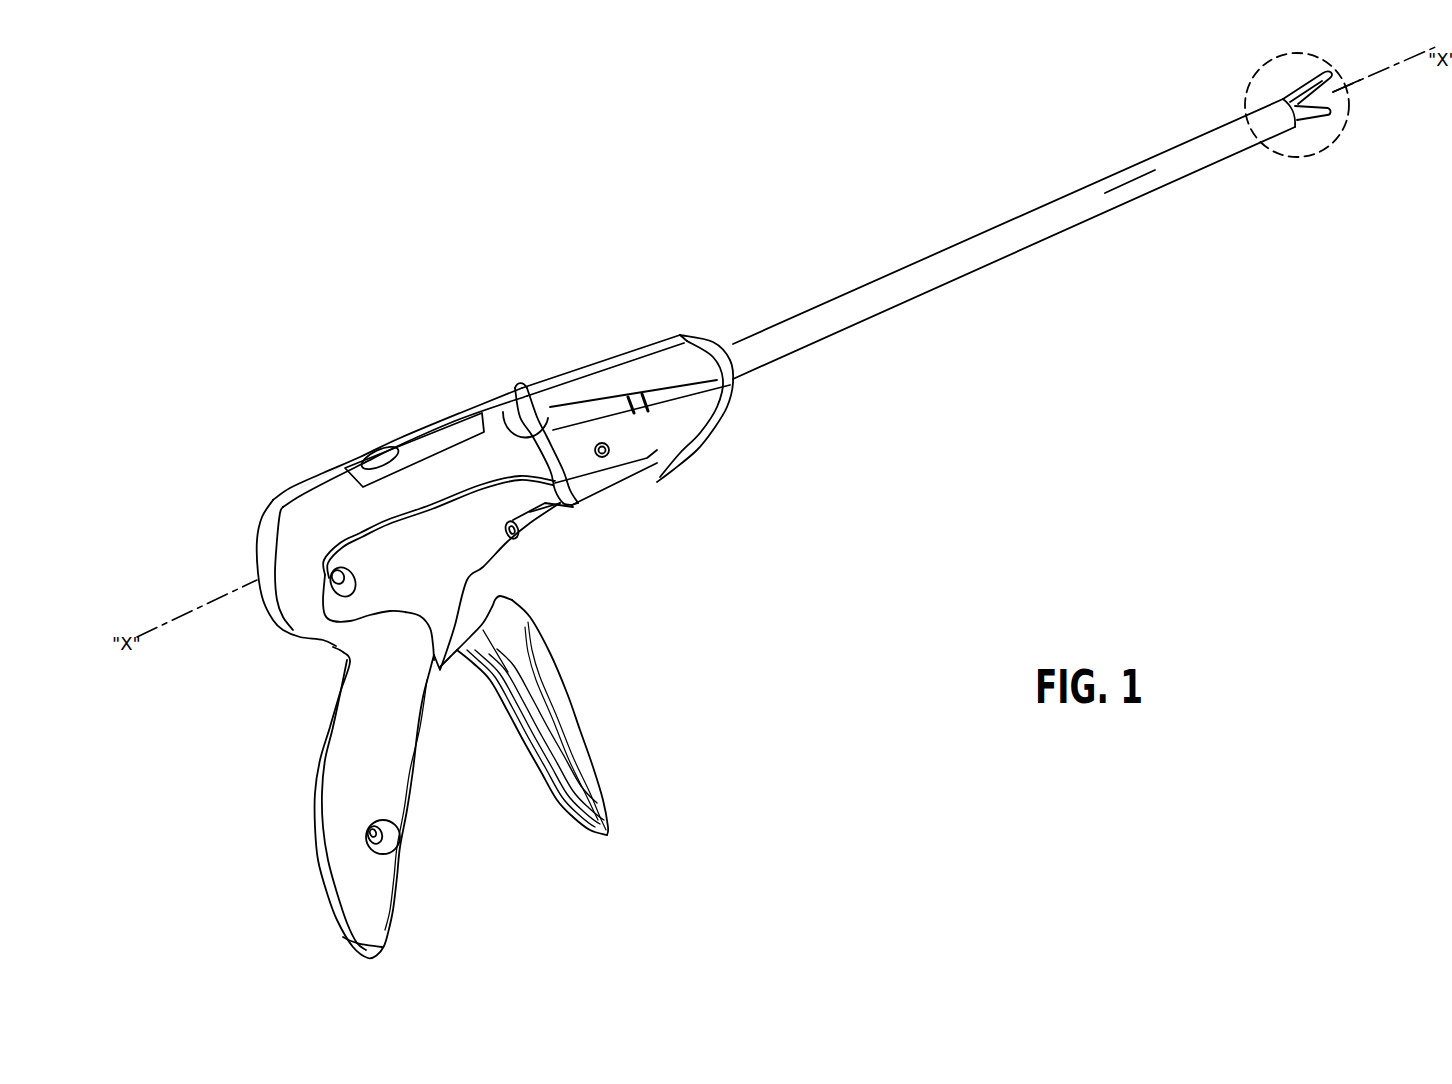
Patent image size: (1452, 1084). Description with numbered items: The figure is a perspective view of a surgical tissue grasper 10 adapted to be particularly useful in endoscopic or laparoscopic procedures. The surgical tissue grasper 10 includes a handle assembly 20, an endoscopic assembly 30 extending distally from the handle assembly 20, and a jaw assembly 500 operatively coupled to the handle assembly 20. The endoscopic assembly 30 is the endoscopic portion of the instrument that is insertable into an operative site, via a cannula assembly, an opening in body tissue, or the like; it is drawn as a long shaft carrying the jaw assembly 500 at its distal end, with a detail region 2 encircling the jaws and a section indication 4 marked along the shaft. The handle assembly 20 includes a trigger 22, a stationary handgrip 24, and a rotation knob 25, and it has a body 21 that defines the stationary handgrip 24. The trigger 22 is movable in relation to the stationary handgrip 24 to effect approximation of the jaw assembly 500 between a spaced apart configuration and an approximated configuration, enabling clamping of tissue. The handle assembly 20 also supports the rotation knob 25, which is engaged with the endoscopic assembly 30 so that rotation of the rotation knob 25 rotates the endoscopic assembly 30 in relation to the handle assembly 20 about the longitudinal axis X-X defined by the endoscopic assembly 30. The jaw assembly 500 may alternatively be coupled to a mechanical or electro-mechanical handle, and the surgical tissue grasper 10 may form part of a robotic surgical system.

The surgical tissue grasper 10 is at (809, 250).
The handle assembly 20 is at (435, 416).
The body 21 is at (327, 493).
The trigger 22 is at (585, 750).
The stationary handgrip 24 is at (320, 823).
The rotation knob 25 is at (585, 372).
The endoscopic assembly 30 is at (887, 272).
The jaw assembly 500 is at (1290, 88).
The detail area of FIG. 2 is at (1320, 156).
The section line 4- 4 is at (1122, 190).